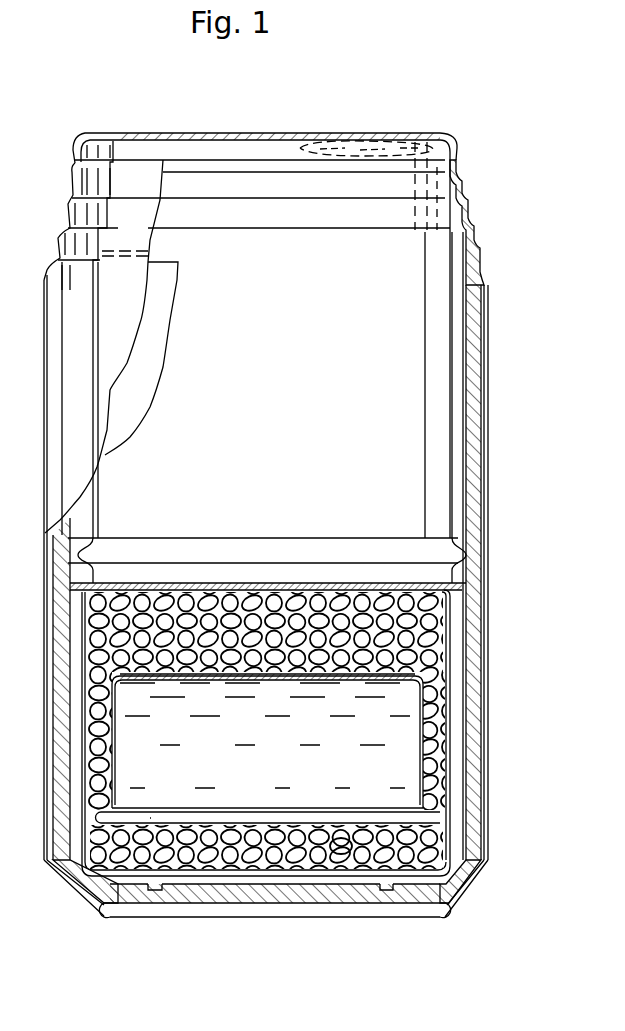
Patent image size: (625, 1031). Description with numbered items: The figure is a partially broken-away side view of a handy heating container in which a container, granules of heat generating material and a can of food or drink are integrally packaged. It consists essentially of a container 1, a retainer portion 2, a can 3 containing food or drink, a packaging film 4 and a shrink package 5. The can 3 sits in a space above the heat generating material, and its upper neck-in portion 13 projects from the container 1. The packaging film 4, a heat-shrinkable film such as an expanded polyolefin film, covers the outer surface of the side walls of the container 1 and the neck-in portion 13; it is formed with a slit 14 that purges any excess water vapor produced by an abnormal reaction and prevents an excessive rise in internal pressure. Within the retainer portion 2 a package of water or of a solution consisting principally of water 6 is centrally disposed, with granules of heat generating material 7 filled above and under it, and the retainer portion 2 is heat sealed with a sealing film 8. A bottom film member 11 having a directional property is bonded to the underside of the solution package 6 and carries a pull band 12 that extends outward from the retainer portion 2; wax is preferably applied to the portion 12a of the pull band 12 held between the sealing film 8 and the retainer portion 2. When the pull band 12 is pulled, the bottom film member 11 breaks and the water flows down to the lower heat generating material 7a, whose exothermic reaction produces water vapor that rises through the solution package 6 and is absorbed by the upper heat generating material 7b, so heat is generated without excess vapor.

The container 1 is at (153, 375).
The retainer portion 2 is at (450, 647).
The can 3 is at (443, 386).
The packaging film 4 is at (480, 300).
The shrink package 5 is at (262, 135).
The solution package 6 is at (432, 740).
The heat generating material 7 is at (278, 845).
The heat generating material 7a is at (341, 852).
The heat generating material 7b is at (292, 590).
The sealing film 8 is at (196, 605).
The bottom film member 11 is at (176, 810).
The pull band 12 is at (440, 617).
The portion of the pull band 12a is at (470, 584).
The upper neck-in portion 13 is at (435, 213).
The slit 14 is at (128, 256).